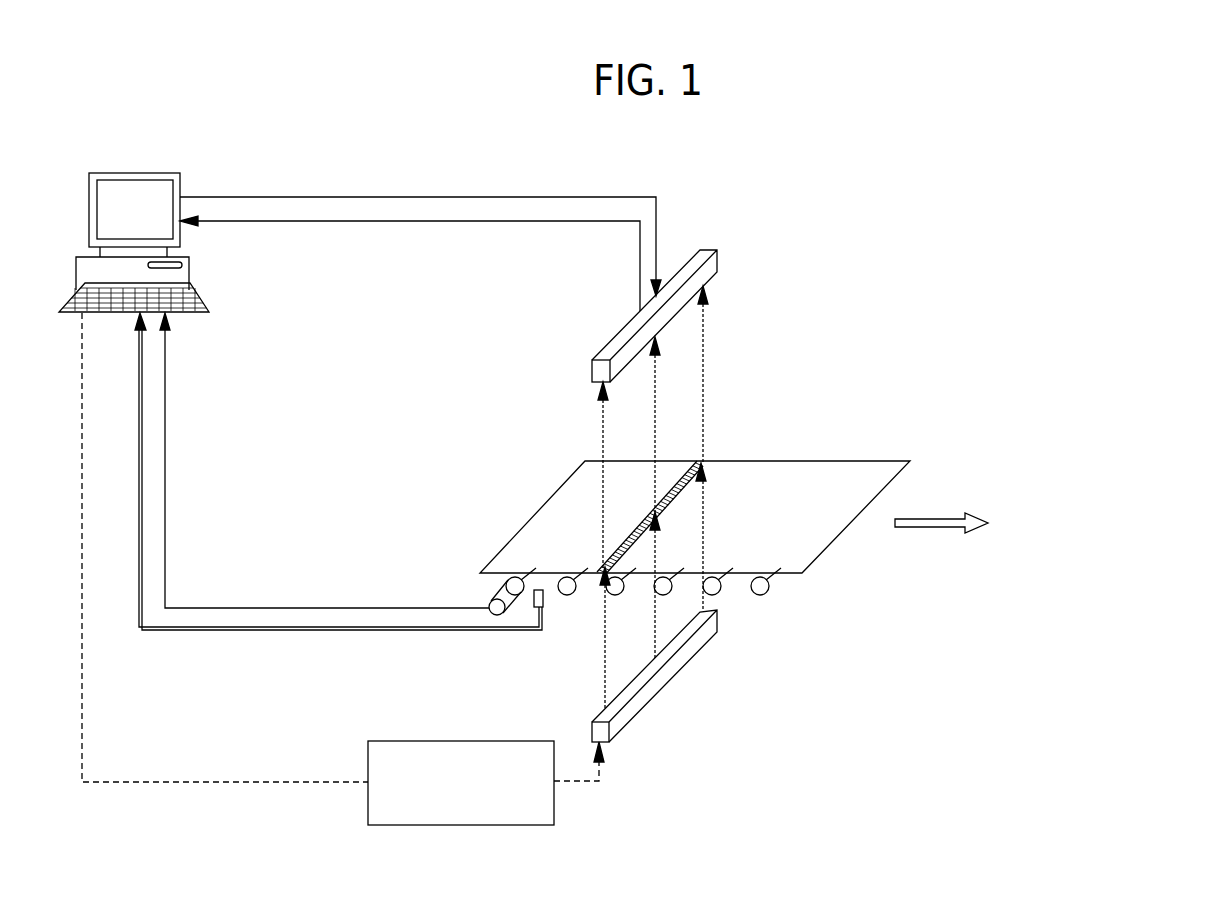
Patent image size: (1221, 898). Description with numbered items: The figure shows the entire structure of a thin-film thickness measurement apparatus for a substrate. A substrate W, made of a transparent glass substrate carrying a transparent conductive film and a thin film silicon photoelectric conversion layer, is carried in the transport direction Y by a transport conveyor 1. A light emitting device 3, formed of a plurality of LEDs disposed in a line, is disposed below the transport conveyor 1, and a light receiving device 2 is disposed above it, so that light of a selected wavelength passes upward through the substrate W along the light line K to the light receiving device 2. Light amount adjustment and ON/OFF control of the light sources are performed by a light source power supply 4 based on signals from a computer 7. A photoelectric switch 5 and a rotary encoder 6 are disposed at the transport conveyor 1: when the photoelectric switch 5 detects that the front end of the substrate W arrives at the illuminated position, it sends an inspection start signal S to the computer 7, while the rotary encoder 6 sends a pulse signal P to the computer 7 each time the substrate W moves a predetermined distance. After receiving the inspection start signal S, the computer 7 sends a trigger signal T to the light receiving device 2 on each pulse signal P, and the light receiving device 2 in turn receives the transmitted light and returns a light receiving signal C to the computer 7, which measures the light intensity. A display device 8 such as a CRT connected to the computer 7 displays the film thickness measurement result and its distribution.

The transport conveyor 1 is at (848, 592).
The light receiving device 2 is at (717, 250).
The light emitting device 3 is at (688, 652).
The light source power supply 4 is at (425, 826).
The photoelectric switch 5 is at (543, 607).
The rotary encoder 6 is at (489, 598).
The computer 7 is at (124, 177).
The display device 8 is at (100, 210).
The light line K is at (701, 478).
The substrate W is at (875, 470).
The transport direction Y is at (952, 526).
The trigger signal T is at (272, 196).
The light receiving signal C is at (313, 223).
The pulse signal P is at (250, 606).
The inspection start signal S is at (226, 631).